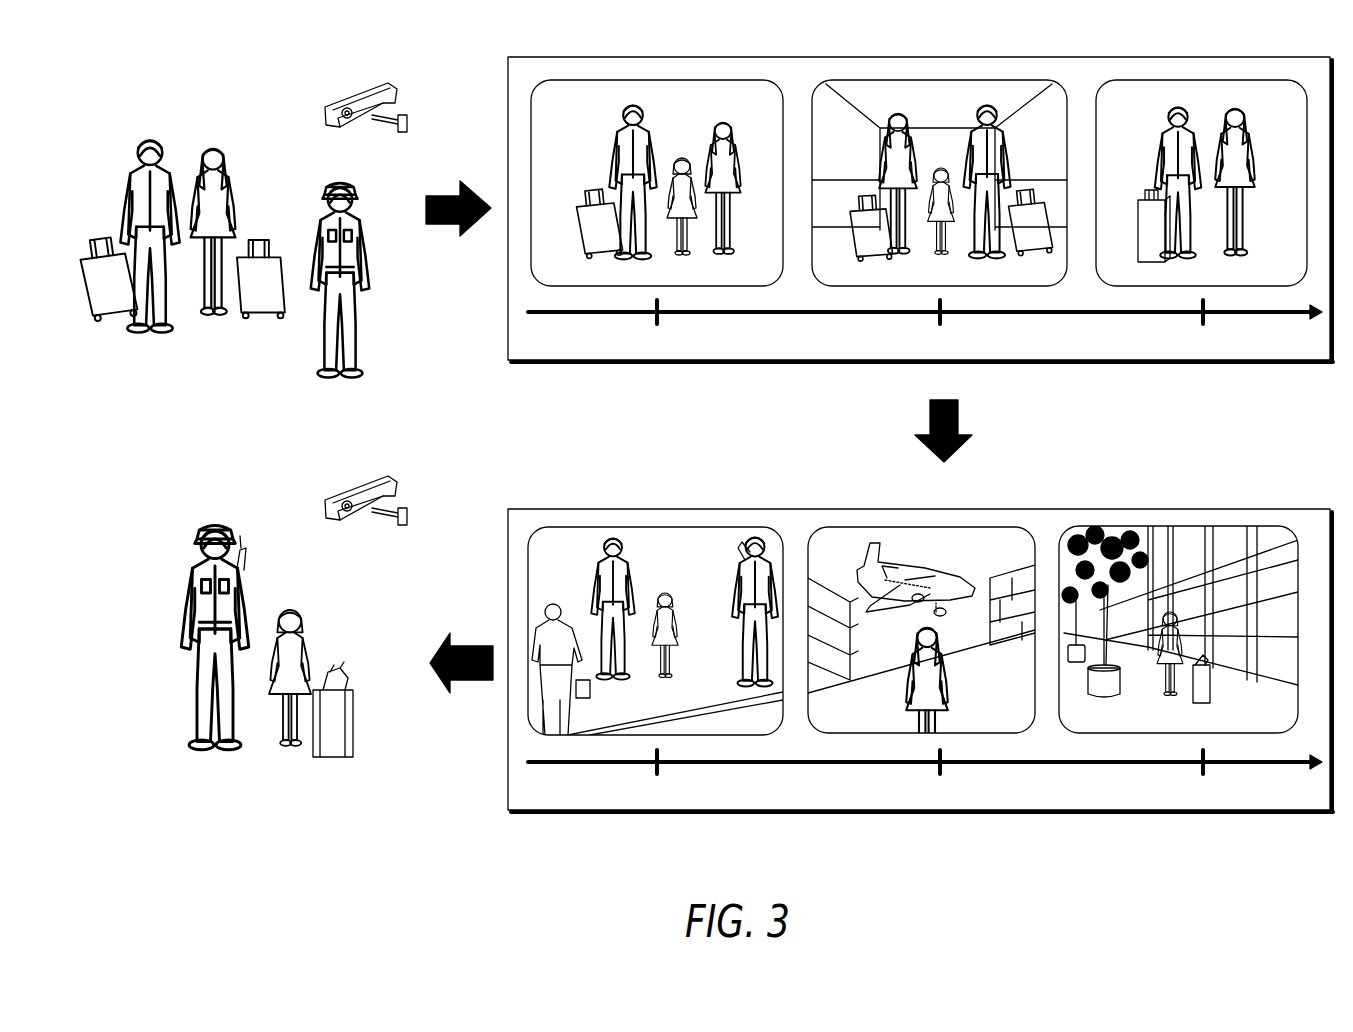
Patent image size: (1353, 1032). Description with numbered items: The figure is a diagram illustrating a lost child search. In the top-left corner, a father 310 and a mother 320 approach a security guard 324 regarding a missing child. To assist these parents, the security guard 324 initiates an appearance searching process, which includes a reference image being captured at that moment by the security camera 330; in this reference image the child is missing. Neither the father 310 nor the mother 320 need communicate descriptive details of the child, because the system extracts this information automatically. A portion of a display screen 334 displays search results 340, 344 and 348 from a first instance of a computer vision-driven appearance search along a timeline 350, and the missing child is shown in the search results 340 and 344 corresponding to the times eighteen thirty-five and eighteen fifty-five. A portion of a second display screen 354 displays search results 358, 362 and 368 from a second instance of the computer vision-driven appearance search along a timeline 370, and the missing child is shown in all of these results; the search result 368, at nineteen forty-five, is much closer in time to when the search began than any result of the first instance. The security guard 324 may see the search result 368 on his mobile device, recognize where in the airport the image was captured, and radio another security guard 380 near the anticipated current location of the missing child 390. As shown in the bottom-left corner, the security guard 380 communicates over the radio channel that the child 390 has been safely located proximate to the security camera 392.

The father 310 is at (140, 140).
The mother 320 is at (213, 148).
The security guard 324 is at (325, 348).
The security camera 330 is at (355, 92).
The display screen 334 is at (508, 128).
The search result 340 is at (610, 80).
The search result 344 is at (945, 80).
The search result 348 is at (1200, 80).
The timeline 350 is at (772, 314).
The display screen 354 is at (508, 575).
The search result 358 is at (655, 527).
The search result 362 is at (915, 527).
The search result 368 is at (1190, 527).
The timeline 370 is at (780, 765).
The security guard 380 is at (215, 530).
The missing child 390 is at (290, 610).
The security camera 392 is at (348, 482).